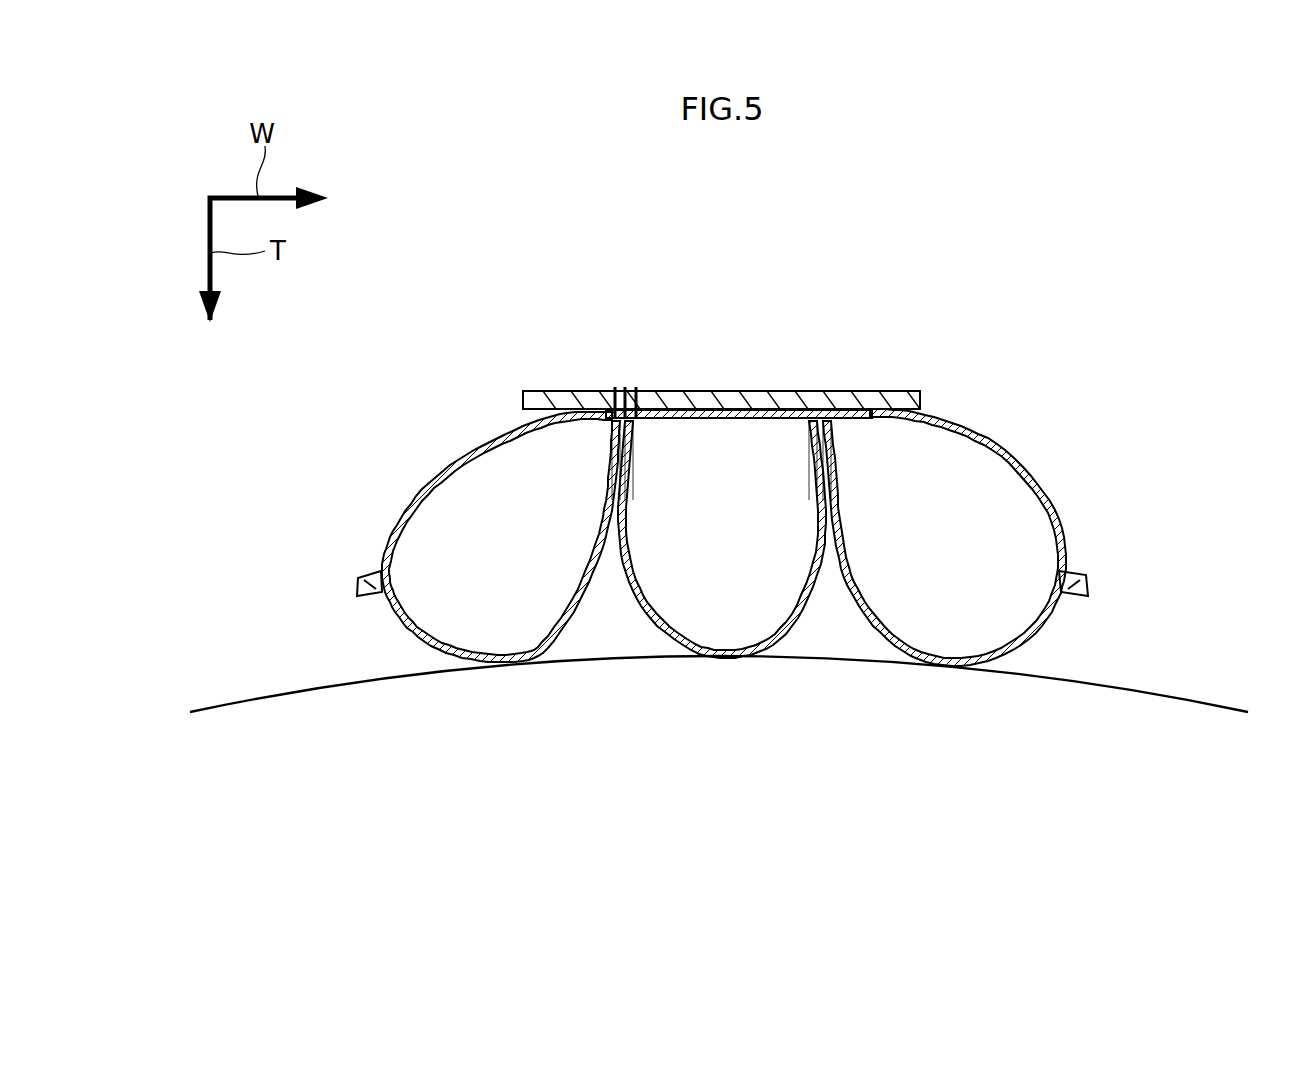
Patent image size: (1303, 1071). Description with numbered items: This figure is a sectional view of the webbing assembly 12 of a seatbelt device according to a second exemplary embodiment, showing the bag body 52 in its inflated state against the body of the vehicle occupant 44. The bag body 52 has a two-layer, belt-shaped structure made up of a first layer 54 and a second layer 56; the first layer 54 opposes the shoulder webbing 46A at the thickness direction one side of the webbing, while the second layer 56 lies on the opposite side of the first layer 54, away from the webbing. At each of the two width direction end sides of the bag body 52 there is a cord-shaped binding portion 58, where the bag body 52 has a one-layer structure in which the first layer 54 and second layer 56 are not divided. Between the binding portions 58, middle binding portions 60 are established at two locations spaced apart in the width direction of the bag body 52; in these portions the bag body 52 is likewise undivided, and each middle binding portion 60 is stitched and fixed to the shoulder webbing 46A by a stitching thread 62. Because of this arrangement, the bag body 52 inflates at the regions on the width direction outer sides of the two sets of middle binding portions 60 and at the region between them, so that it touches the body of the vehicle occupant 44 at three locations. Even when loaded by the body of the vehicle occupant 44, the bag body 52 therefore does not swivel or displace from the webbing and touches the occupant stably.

The webbing assembly 12 is at (744, 485).
The vehicle occupant 44 is at (238, 704).
The shoulder webbing 46A is at (778, 398).
The bag body 52 is at (748, 520).
The first layer 54 is at (981, 447).
The second layer 56 is at (873, 617).
The binding portion 58 is at (377, 573).
The middle binding portion 60 is at (643, 447).
The stitching thread 62 is at (640, 397).